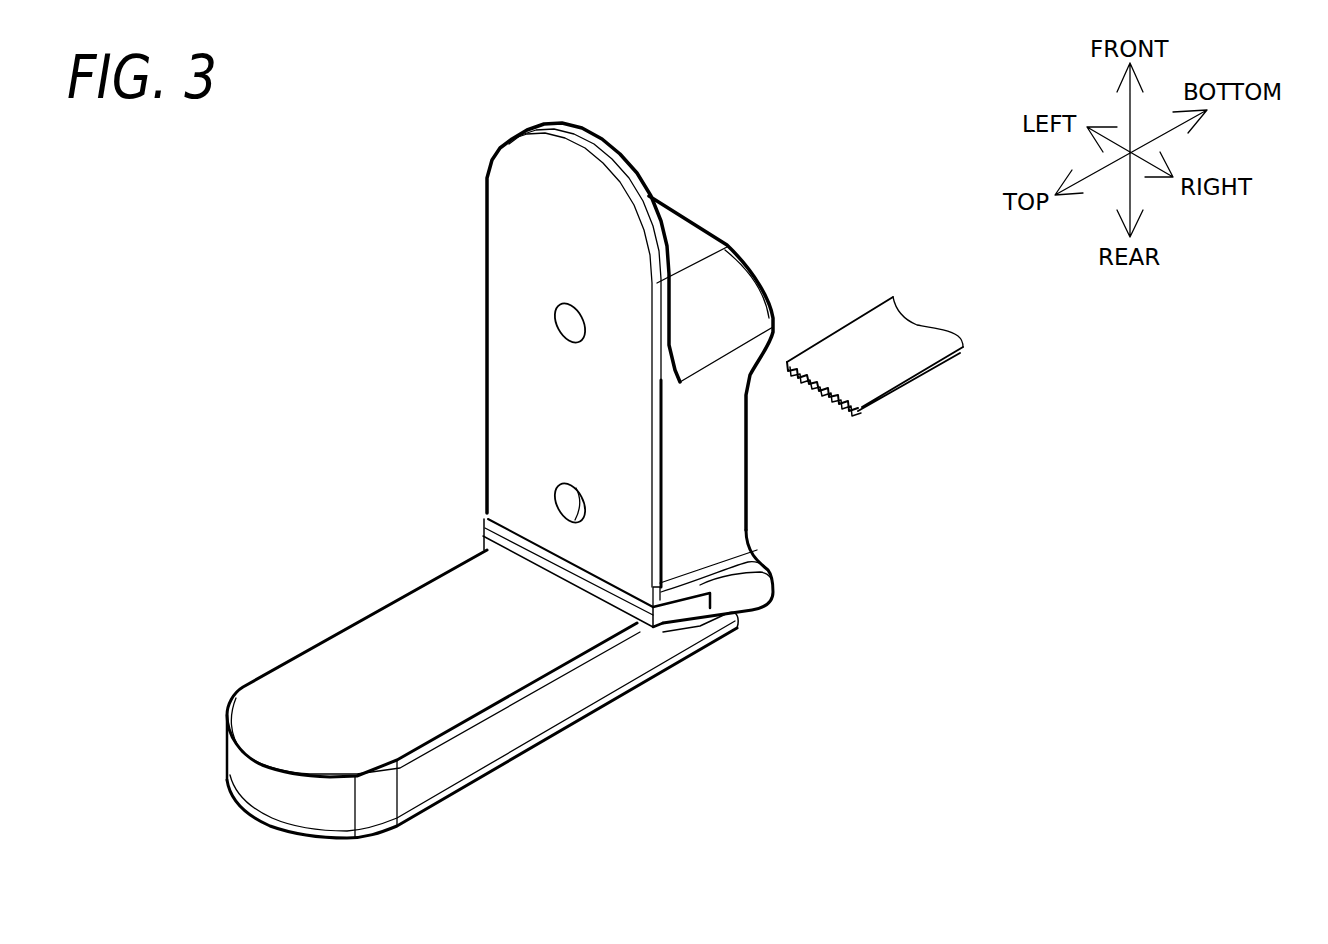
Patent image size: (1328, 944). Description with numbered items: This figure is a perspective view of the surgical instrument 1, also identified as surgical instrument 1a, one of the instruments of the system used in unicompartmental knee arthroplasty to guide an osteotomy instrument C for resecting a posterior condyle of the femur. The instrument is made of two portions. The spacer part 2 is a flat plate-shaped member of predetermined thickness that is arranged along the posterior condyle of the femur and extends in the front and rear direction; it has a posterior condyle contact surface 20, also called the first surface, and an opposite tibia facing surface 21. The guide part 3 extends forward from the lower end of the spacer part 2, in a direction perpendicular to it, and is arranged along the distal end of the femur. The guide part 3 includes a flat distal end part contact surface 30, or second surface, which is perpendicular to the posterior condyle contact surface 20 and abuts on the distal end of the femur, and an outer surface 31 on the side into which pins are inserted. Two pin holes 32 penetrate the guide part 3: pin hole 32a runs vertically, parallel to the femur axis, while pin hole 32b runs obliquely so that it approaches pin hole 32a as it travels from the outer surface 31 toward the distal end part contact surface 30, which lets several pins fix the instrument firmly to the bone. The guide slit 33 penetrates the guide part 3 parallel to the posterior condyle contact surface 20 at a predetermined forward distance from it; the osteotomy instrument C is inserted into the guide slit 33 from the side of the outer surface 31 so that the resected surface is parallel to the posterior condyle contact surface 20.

The surgical instrument 1 is at (715, 125).
The surgical instrument 1a is at (488, 499).
The spacer part 2 is at (237, 801).
The posterior condyle contact surface 20 is at (350, 680).
The tibia facing surface 21 is at (505, 772).
The guide part 3 is at (747, 478).
The distal end part contact surface 30 is at (513, 347).
The outer surface 31 is at (747, 262).
The pin hole 32 is at (471, 366).
The pin hole 32a is at (560, 320).
The pin hole 32b is at (563, 495).
The guide slit 33 is at (532, 547).
The osteotomy instrument C is at (893, 365).